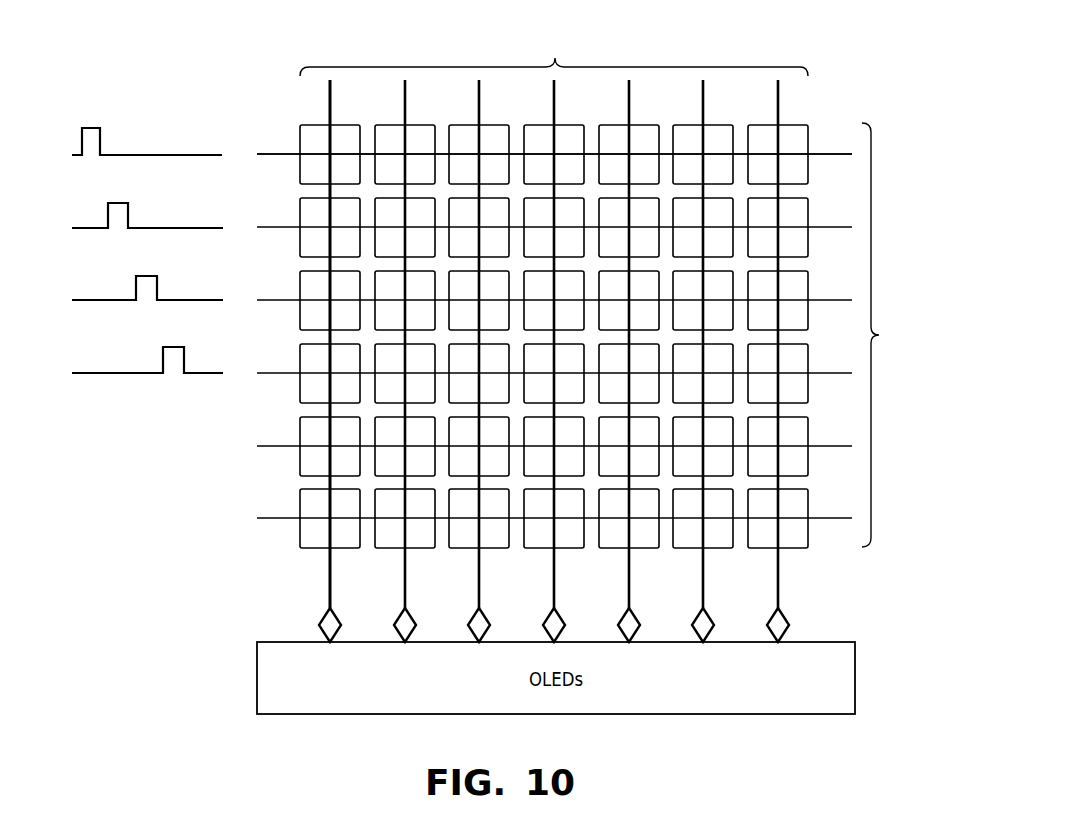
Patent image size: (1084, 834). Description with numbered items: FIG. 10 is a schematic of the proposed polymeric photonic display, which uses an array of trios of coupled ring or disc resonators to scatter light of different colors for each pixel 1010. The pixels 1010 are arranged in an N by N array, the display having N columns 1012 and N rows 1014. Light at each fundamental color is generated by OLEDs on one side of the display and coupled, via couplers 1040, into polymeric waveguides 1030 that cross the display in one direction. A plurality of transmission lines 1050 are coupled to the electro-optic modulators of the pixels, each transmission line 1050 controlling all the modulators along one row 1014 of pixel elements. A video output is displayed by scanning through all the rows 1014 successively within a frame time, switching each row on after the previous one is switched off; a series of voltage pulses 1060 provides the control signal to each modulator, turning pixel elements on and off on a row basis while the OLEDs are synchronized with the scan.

The pixel 1010 is at (790, 124).
The columns 1012 is at (555, 58).
The rows 1014 is at (879, 335).
The polymeric waveguides 1030 is at (330, 584).
The couplers 1040 is at (786, 613).
The transmission lines 1050 is at (281, 154).
The voltage pulses 1060 is at (98, 97).